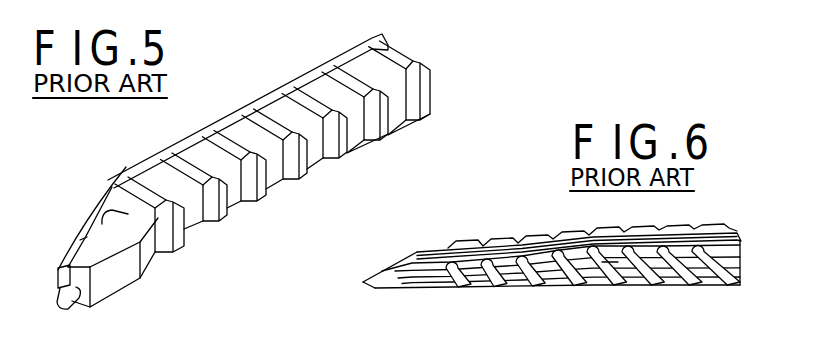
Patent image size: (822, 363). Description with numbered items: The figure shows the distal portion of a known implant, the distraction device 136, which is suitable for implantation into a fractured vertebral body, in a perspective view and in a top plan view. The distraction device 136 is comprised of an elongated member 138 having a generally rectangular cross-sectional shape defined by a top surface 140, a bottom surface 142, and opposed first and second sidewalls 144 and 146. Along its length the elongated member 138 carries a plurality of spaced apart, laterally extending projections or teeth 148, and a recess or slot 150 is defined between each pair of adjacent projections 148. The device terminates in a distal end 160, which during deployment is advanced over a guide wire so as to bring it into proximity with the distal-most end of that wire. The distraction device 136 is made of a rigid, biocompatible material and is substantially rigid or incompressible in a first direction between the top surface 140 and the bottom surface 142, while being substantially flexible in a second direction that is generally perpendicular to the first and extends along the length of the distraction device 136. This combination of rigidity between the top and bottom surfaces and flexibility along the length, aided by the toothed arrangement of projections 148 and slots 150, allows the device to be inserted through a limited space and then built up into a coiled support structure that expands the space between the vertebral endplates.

In FIG. 5, the distraction device 136 is at (414, 149).
In FIG. 6, the distraction device 136 is at (737, 300).
In FIG. 5, the elongated member 138 is at (358, 42).
In FIG. 6, the elongated member 138 is at (738, 238).
In FIG. 5, the top surface 140 is at (402, 62).
In FIG. 6, the top surface 140 is at (418, 262).
In FIG. 5, the bottom surface 142 is at (152, 268).
In FIG. 5, the first sidewall 144 is at (121, 178).
In FIG. 6, the first sidewall 144 is at (610, 227).
In FIG. 5, the second sidewall 146 is at (350, 145).
In FIG. 6, the second sidewall 146 is at (450, 288).
In FIG. 5, the projections or teeth 148 is at (300, 182).
In FIG. 6, the projections or teeth 148 is at (522, 287).
In FIG. 5, the recess or slot 150 is at (297, 88).
In FIG. 6, the recess or slot 150 is at (648, 293).
In FIG. 5, the distal end 160 is at (80, 307).
In FIG. 6, the distal end 160 is at (375, 290).